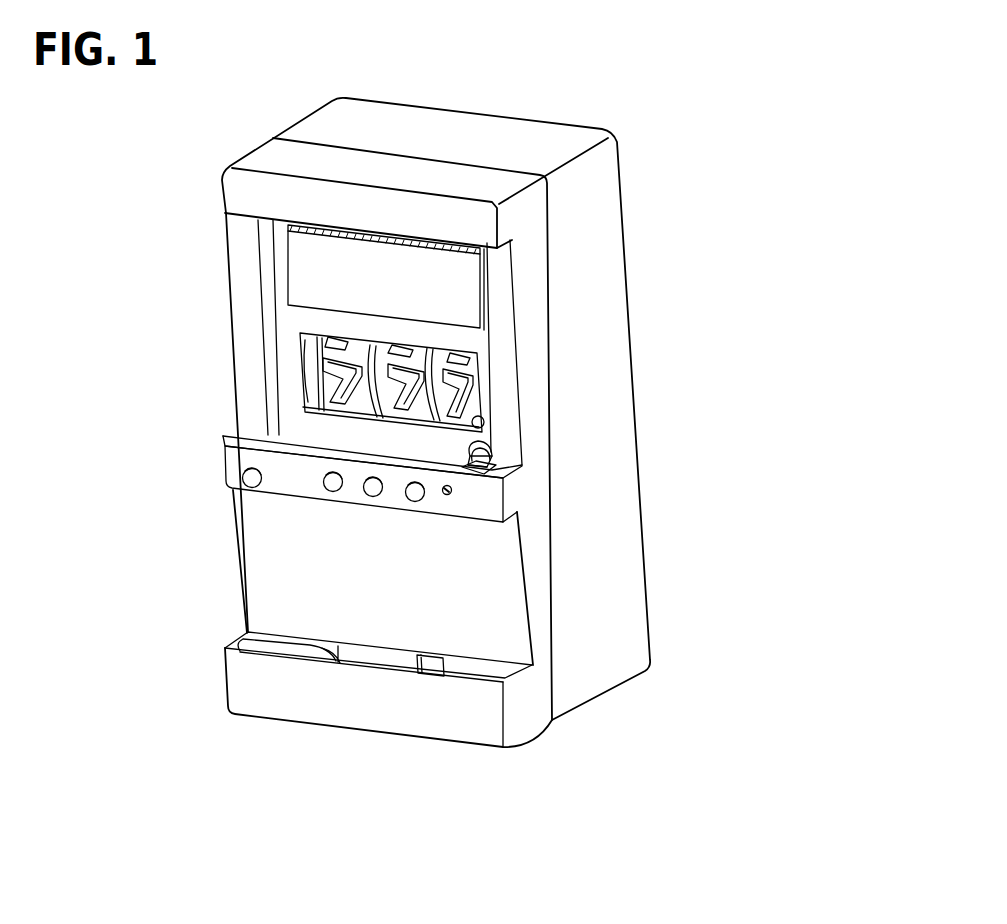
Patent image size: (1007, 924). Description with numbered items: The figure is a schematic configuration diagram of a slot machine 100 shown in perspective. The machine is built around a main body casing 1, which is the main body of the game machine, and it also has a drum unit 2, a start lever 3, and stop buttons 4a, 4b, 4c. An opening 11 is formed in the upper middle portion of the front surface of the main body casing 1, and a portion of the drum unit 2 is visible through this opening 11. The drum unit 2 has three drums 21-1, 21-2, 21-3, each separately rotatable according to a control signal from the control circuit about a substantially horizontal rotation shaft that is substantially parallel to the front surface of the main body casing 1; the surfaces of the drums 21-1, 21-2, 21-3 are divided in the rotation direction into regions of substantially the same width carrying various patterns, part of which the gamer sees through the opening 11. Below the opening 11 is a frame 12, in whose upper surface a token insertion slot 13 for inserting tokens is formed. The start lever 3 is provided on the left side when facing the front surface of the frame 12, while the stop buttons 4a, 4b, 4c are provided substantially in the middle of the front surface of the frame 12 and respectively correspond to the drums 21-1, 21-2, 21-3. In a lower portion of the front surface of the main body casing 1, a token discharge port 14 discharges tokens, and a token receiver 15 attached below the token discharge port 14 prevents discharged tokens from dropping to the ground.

The slot machine 100 is at (473, 491).
The main body casing 1 is at (607, 273).
The opening 11 is at (303, 360).
The drum unit 2 is at (546, 369).
The drum 21-1 is at (357, 403).
The drum 21-2 is at (417, 357).
The drum 21-3 is at (473, 367).
The token insertion slot 13 is at (490, 443).
The frame 12 is at (438, 540).
The start lever 3 is at (250, 477).
The stop button 4a is at (333, 482).
The stop button 4b is at (377, 495).
The stop button 4c is at (427, 500).
The token discharge port 14 is at (430, 672).
The token receiver 15 is at (443, 712).